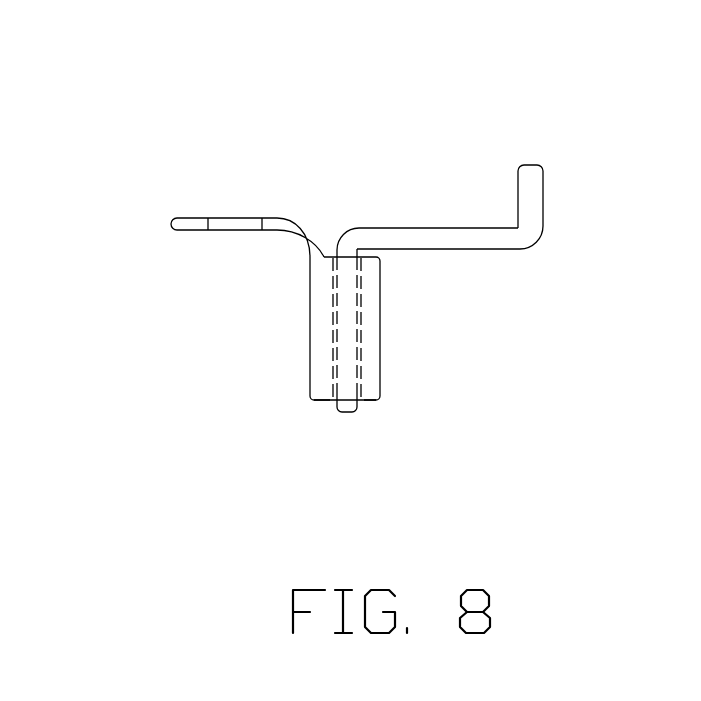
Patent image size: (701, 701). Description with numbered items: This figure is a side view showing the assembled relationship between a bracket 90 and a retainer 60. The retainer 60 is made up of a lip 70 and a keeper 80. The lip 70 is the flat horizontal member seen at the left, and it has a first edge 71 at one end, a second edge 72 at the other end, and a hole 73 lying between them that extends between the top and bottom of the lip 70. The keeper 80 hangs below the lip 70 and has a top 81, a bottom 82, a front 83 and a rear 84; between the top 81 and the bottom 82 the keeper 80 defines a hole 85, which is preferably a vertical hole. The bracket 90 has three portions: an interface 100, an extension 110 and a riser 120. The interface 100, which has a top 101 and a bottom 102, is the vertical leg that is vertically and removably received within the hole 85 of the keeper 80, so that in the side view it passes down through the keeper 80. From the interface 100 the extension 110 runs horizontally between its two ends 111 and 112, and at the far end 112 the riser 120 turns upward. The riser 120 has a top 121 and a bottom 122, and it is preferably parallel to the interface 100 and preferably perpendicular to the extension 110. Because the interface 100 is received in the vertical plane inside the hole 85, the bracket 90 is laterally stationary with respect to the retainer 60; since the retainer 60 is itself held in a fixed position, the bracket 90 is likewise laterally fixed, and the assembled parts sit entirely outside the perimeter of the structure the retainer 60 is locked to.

The retainer 60 is at (285, 265).
The lip 70 is at (201, 211).
The first edge 71 is at (177, 223).
The second edge 72 is at (285, 218).
The hole 73 is at (230, 220).
The keeper 80 is at (351, 277).
The top 81 is at (333, 257).
The bottom 82 is at (362, 400).
The front 83 is at (380, 340).
The rear 84 is at (310, 327).
The hole 85 is at (328, 405).
The bracket 90 is at (509, 266).
The interface 100 is at (347, 413).
The top 101 is at (355, 229).
The bottom 102 is at (407, 235).
The extension 110 is at (469, 221).
The end 111 is at (430, 228).
The end 112 is at (517, 227).
The riser 120 is at (574, 160).
The top 121 is at (544, 173).
The bottom 122 is at (601, 245).